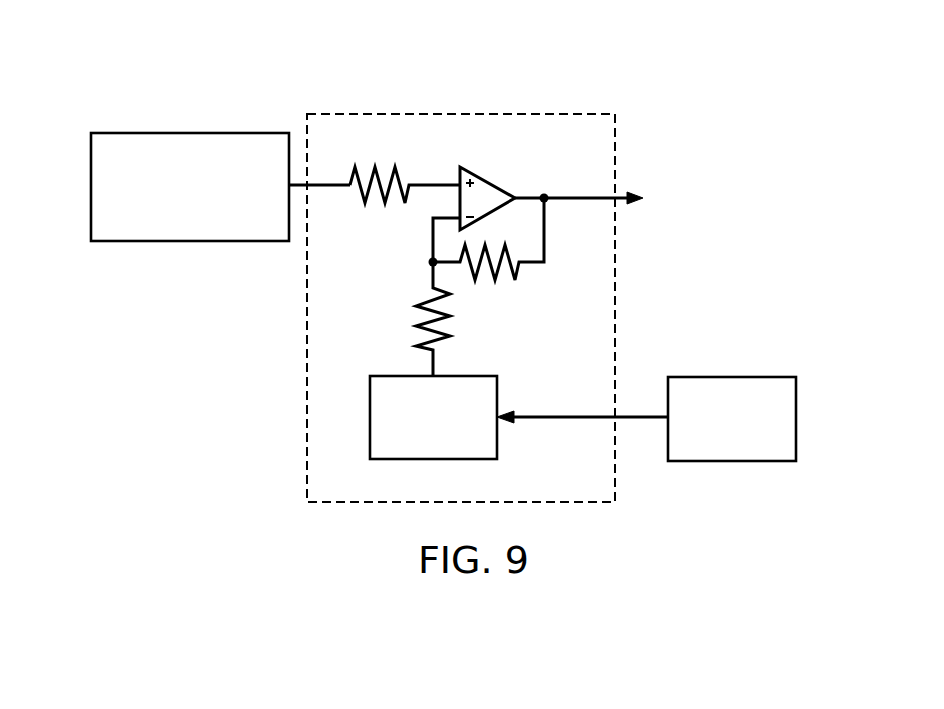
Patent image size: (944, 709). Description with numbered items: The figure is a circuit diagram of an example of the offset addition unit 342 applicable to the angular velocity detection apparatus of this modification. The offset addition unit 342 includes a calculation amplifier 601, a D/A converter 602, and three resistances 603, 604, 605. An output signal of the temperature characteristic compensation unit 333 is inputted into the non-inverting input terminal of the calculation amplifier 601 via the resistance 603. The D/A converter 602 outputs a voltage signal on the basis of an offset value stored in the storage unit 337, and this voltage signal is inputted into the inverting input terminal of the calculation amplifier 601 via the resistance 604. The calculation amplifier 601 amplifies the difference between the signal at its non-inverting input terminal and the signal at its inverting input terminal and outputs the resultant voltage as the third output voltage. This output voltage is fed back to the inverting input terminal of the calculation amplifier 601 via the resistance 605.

The temperature characteristic compensation unit 333 is at (197, 133).
The offset addition unit 342 is at (509, 113).
The resistance 603 is at (354, 167).
The calculation amplifier 601 is at (502, 186).
The resistance 605 is at (517, 278).
The resistance 604 is at (418, 304).
The D/A converter 602 is at (385, 376).
The storage unit 337 is at (760, 377).